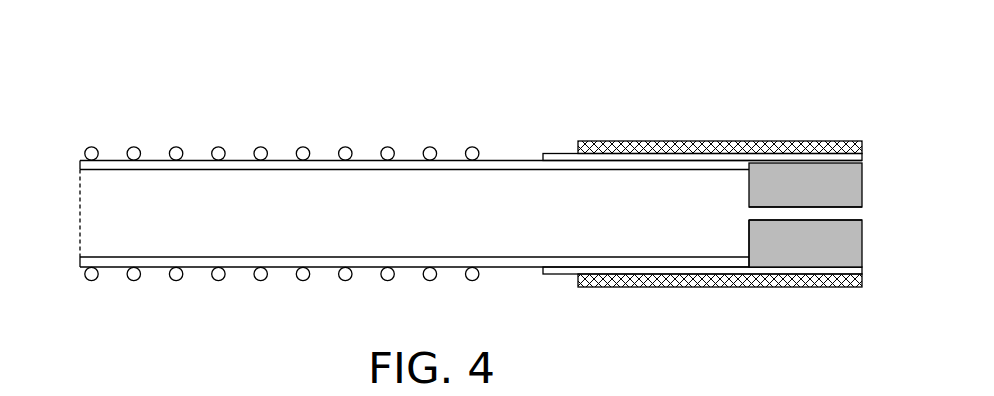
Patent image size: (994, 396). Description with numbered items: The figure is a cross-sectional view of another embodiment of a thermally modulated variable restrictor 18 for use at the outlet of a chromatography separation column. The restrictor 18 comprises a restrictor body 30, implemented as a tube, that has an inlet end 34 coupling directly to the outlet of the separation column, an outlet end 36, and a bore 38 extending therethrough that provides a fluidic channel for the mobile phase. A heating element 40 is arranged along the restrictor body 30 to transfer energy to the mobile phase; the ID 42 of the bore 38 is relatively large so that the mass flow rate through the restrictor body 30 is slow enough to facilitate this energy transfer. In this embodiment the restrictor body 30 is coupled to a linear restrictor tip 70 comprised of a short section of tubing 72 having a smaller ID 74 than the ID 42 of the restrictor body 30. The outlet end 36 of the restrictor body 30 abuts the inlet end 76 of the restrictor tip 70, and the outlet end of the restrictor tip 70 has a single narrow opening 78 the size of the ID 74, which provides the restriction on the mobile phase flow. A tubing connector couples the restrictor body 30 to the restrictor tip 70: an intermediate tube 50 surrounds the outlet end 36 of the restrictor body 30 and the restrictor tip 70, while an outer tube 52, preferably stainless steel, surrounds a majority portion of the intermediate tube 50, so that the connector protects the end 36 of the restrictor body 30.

The thermally modulated variable restrictor 18 is at (76, 73).
The restrictor body 30 is at (110, 267).
The inlet end 34 is at (80, 220).
The outlet end 36 is at (748, 214).
The bore 38 is at (282, 243).
The heating element 40 is at (129, 147).
The ID of the bore 42 is at (430, 176).
The intermediate tube 50 is at (558, 152).
The outer tube 52 is at (835, 137).
The linear restrictor tip 70 is at (870, 165).
The section of tubing 72 is at (820, 245).
The ID of the restrictor tip 74 is at (786, 233).
The inlet end of the restrictor tip 76 is at (751, 238).
The narrow opening 78 is at (864, 214).